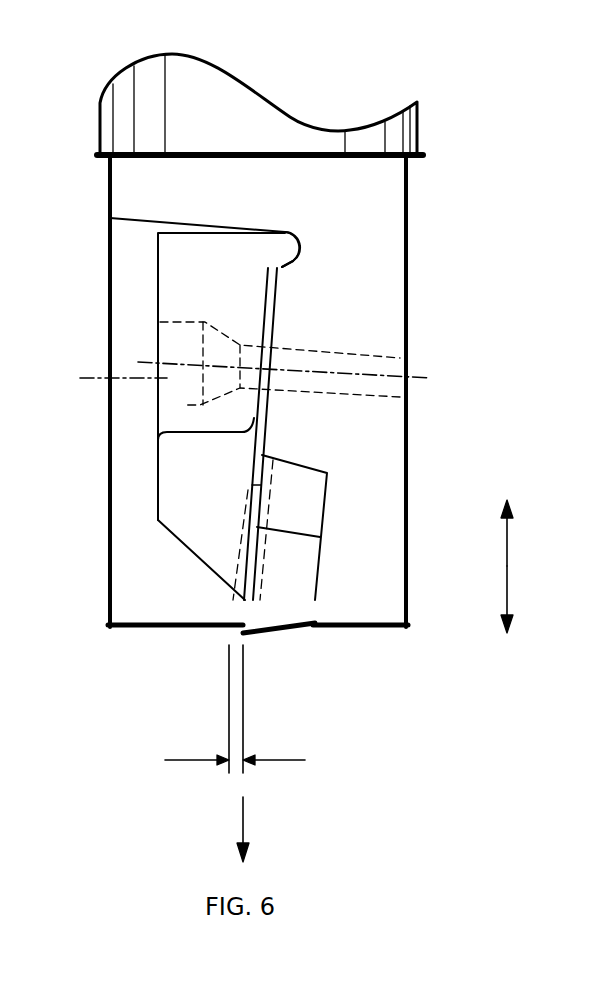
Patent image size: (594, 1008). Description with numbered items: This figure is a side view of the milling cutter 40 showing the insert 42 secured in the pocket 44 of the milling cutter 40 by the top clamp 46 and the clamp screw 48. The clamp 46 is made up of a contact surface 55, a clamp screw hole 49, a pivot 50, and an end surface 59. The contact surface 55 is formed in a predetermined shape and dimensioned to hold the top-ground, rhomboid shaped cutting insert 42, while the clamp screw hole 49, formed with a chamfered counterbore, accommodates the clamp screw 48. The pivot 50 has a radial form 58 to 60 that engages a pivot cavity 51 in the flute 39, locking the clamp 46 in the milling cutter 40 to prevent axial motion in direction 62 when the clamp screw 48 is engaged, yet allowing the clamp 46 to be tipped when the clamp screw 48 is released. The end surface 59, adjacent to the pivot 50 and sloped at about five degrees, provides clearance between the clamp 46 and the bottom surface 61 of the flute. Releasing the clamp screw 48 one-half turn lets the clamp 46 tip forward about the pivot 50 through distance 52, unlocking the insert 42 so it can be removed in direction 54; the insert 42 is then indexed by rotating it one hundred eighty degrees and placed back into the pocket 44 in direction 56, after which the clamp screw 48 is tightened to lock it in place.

The flute 39 is at (310, 170).
The milling cutter 40 is at (175, 628).
The insert 42 is at (290, 634).
The pocket 44 is at (327, 493).
The clamp 46 is at (172, 538).
The clamp screw 48 is at (235, 363).
The clamp screw hole 49 is at (175, 405).
The pivot 50 is at (300, 248).
The pivot cavity 51 is at (292, 263).
The distance 52 is at (185, 760).
The direction 54 is at (508, 608).
The contact surface 55 is at (320, 537).
The direction 56 is at (508, 530).
The radial form 58 is at (290, 229).
The end surface 59 is at (185, 233).
The radial form 60 is at (284, 268).
The bottom surface of the flute 61 is at (130, 222).
The direction 62 is at (246, 808).